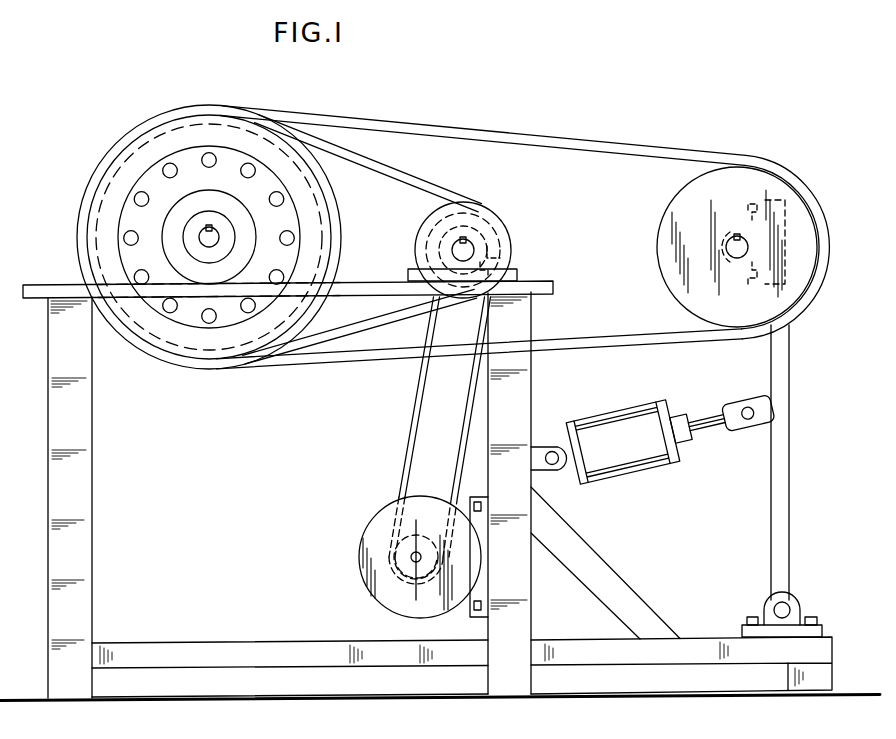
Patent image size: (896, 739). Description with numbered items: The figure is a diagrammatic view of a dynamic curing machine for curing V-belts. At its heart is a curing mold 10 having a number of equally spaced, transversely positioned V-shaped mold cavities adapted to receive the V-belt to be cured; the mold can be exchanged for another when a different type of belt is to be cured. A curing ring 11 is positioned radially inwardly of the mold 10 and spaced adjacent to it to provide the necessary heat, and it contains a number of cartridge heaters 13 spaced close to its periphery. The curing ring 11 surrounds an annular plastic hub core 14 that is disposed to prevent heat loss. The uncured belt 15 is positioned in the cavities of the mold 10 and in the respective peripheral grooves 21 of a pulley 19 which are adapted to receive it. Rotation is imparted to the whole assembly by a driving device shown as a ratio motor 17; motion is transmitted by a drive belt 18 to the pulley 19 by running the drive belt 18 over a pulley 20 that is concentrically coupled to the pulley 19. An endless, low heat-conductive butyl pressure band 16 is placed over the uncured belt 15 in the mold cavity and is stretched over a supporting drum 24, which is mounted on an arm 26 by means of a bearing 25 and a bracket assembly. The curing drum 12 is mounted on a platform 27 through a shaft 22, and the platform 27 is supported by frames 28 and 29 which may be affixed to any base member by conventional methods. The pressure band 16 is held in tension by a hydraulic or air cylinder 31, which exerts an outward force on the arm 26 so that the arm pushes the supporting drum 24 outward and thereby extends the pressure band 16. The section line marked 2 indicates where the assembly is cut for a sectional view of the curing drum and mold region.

The section line 2- 2 is at (157, 330).
The curing mold 10 is at (222, 135).
The curing ring 11 is at (187, 150).
The curing drum 12 is at (112, 237).
The cartridge heaters 13 is at (146, 194).
The annular plastic hub core 14 is at (232, 197).
The uncured belt 15 is at (408, 181).
The pressure band 16 is at (487, 124).
The ratio motor 17 is at (365, 533).
The drive belt 18 is at (409, 431).
The pulley 19 is at (492, 239).
The pulley 20 is at (505, 255).
The peripheral grooves 21 is at (492, 223).
The shaft 22 is at (214, 243).
The supporting drum 24 is at (693, 188).
The bearing 25 is at (755, 207).
The arm 26 is at (778, 525).
The platform 27 is at (550, 287).
The frame 28 is at (92, 539).
The frame 29 is at (530, 484).
The hydraulic or air cylinder 31 is at (627, 411).